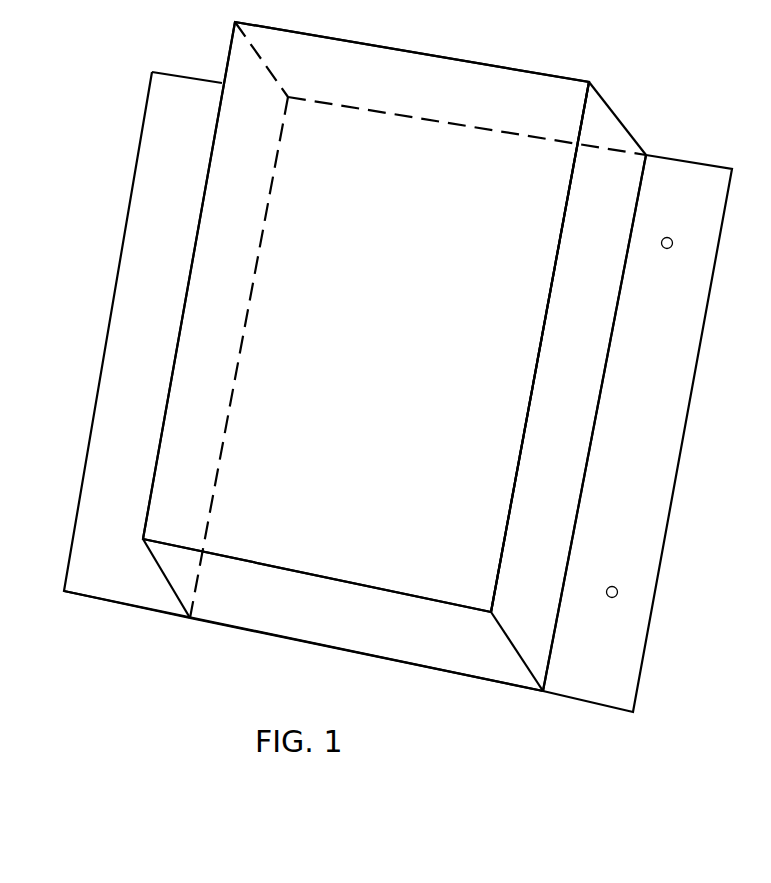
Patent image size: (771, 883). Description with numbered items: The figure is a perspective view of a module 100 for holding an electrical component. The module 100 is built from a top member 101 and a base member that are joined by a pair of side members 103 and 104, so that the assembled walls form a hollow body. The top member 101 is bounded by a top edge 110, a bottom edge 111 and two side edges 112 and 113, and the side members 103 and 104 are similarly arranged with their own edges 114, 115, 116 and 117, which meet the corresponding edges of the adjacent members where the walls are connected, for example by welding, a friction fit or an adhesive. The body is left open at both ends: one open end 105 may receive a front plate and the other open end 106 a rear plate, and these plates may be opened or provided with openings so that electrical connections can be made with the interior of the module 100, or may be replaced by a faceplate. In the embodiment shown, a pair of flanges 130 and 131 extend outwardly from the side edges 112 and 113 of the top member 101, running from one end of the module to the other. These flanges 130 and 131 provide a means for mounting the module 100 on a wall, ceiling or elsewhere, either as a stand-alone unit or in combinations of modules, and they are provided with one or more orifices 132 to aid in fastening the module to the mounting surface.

The module 100 is at (415, 666).
The top member 101 is at (366, 317).
The side member 103 is at (150, 565).
The side member 104 is at (606, 122).
The open end 105 is at (366, 394).
The open end 106 is at (510, 68).
The top edge 110 is at (373, 46).
The bottom edge 111 is at (258, 562).
The side edge 112 is at (183, 305).
The side edge 113 is at (546, 312).
The edge 114 is at (633, 142).
The edge 115 is at (623, 272).
The edge 116 is at (510, 645).
The edge 117 is at (530, 428).
The flange 130 is at (143, 345).
The flange 131 is at (637, 433).
The orifice 132 is at (672, 248).